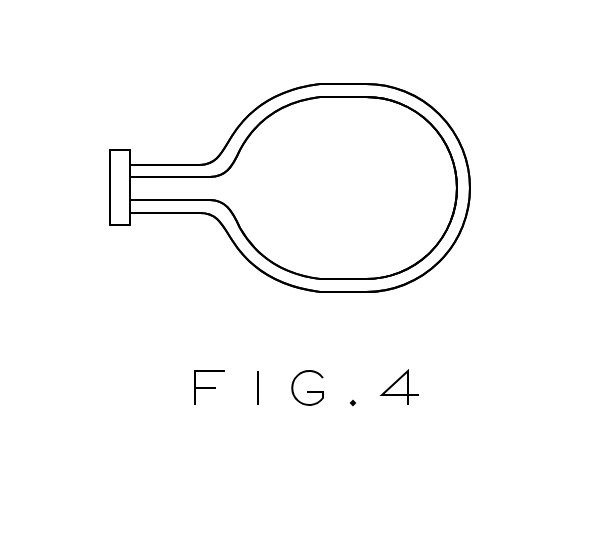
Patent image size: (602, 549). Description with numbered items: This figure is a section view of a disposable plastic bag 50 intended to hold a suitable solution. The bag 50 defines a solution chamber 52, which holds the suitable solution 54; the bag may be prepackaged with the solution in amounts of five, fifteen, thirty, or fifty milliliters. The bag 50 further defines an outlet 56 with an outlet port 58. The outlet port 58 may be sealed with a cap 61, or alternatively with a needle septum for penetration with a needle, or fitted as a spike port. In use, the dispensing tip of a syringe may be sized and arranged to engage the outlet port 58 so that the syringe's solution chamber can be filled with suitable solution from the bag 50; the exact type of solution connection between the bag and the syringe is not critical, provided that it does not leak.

The disposable plastic bag 50 is at (407, 66).
The solution chamber 52 is at (349, 197).
The suitable solution 54 is at (420, 192).
The outlet 56 is at (153, 213).
The outlet port 58 is at (152, 165).
The cap 61 is at (118, 226).